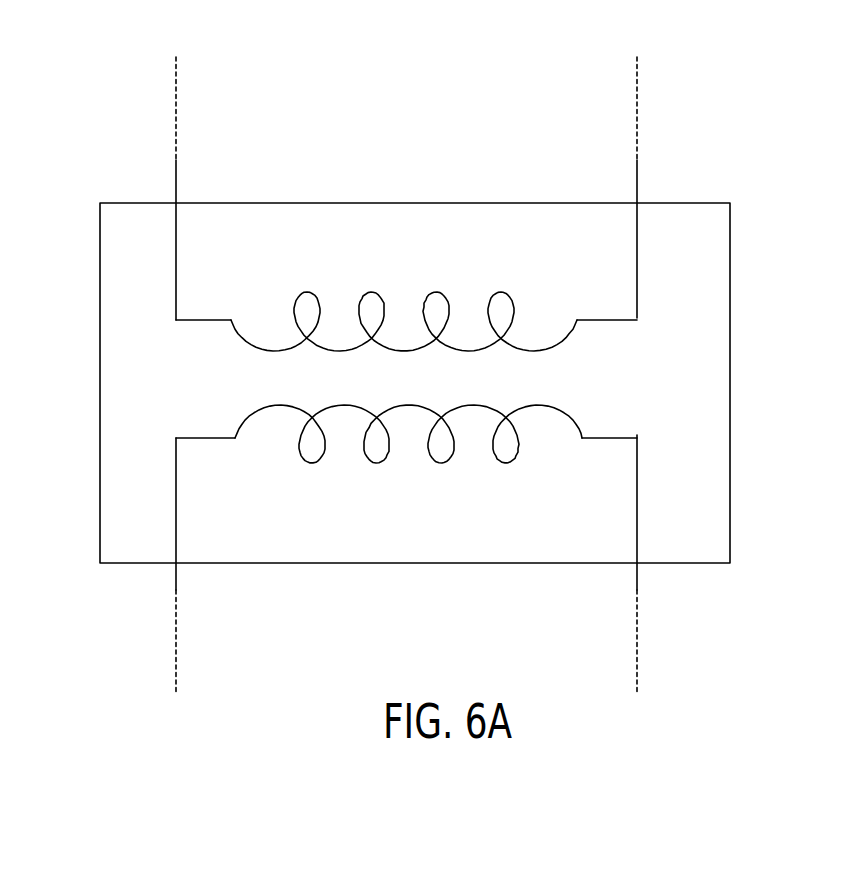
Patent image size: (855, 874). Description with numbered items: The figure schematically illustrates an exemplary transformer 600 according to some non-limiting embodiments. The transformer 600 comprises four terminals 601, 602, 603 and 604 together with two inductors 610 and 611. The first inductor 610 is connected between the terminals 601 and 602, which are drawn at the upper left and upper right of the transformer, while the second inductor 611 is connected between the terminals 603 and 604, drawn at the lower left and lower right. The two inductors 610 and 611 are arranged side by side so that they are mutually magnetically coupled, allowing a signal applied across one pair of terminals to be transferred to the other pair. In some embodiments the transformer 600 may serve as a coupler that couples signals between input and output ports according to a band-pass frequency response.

The transformer 600 is at (126, 83).
The terminal 601 is at (176, 187).
The terminal 602 is at (637, 187).
The terminal 603 is at (176, 580).
The terminal 604 is at (637, 577).
The inductor 610 is at (362, 295).
The inductor 611 is at (441, 462).